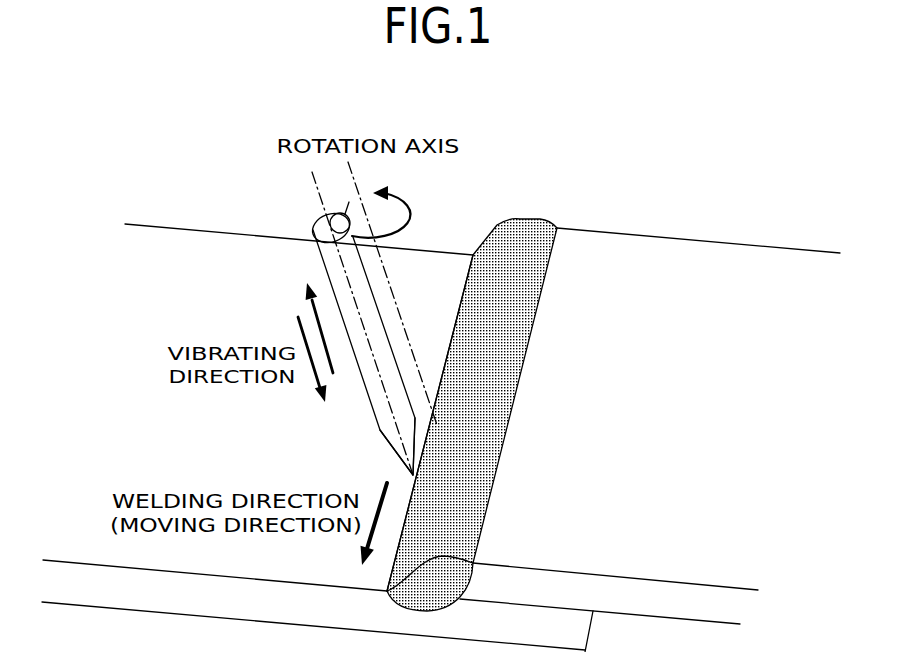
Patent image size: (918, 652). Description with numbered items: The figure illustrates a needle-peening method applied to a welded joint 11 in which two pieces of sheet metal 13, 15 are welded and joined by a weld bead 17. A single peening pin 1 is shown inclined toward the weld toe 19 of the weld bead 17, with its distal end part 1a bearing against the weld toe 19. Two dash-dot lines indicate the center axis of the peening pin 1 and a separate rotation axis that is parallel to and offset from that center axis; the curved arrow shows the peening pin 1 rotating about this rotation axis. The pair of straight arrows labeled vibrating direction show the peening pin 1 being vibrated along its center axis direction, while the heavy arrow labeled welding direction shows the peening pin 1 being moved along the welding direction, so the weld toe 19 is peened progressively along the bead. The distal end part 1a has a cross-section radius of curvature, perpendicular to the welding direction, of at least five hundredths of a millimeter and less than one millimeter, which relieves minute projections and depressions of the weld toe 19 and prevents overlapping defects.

The peening pin 1 is at (327, 275).
The distal end part 1a is at (413, 474).
The welded joint 11 is at (576, 139).
The sheet metal 13 is at (186, 235).
The sheet metal 15 is at (708, 252).
The weld bead 17 is at (500, 222).
The weld toe 19 is at (443, 343).